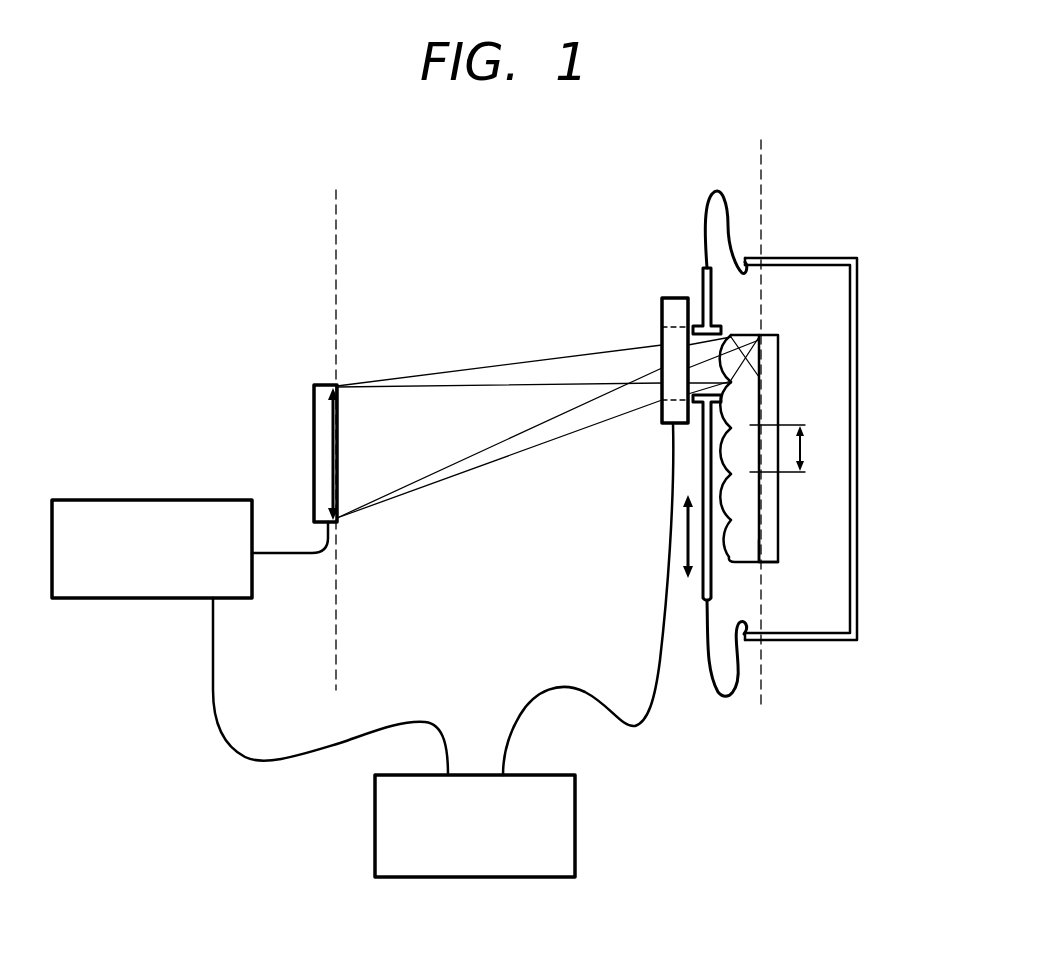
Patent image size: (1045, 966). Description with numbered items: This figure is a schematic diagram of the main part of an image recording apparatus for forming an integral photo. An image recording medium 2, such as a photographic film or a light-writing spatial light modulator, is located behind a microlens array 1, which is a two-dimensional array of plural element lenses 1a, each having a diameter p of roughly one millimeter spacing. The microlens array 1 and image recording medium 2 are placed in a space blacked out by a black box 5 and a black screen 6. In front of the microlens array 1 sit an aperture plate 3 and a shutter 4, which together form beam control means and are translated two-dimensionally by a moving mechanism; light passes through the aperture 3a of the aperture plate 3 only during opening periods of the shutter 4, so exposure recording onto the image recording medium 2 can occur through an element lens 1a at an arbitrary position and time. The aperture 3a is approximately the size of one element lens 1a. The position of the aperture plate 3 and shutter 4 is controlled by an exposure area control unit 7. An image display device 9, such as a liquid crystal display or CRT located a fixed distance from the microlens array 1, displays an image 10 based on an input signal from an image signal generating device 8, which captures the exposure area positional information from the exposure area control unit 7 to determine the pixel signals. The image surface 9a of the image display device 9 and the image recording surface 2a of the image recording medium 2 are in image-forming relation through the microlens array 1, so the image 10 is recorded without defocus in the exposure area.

The microlens array 1 is at (740, 345).
The element lens 1a is at (740, 492).
The image recording medium 2 is at (778, 360).
The image recording surface 2a is at (752, 540).
The aperture plate 3 is at (702, 287).
The aperture 3a is at (700, 365).
The shutter 4 is at (662, 318).
The black box 5 is at (858, 540).
The black screen 6 is at (710, 196).
The exposure area control unit 7 is at (495, 877).
The image signal generating device 8 is at (178, 500).
The image display device 9 is at (315, 428).
The image surface 9a is at (337, 414).
The image 10 is at (337, 470).
The diameter of the microlens p is at (787, 448).